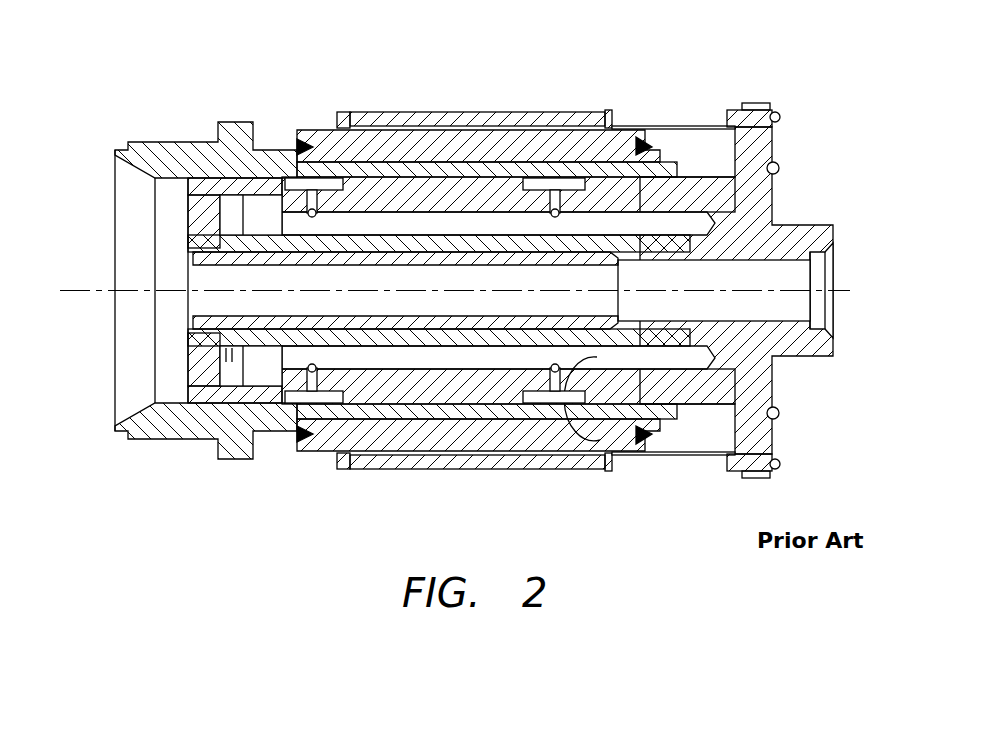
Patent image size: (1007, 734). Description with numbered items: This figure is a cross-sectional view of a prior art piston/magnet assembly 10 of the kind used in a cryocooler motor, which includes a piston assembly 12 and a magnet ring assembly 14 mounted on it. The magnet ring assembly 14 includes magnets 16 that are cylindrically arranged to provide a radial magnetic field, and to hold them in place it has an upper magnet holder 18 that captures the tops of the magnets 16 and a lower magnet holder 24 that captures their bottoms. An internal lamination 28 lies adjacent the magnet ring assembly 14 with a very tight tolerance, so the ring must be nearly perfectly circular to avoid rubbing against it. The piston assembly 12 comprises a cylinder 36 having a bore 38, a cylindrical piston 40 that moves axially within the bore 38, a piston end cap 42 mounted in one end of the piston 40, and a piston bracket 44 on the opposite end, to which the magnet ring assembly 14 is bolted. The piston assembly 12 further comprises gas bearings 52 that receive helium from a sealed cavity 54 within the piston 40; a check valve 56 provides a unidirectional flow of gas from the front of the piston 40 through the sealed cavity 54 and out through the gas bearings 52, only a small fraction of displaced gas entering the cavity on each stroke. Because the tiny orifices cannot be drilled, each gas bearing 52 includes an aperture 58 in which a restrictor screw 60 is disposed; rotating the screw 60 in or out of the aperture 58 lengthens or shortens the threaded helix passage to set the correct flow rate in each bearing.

The piston/magnet assembly 10 is at (567, 62).
The piston assembly 12 is at (782, 222).
The magnet ring assembly 14 is at (615, 100).
The magnets 16 is at (443, 108).
The upper magnet holder 18 is at (612, 118).
The lower magnet holder 24 is at (340, 108).
The internal lamination 28 is at (506, 145).
The cylinder 36 is at (285, 425).
The bore 38 is at (178, 212).
The piston 40 is at (694, 397).
The piston end cap 42 is at (200, 368).
The piston bracket 44 is at (760, 393).
The gas bearings 52 is at (532, 402).
The sealed cavity 54 is at (388, 357).
The check valve 56 is at (225, 352).
The aperture 58 is at (549, 402).
The screw 60 is at (600, 440).